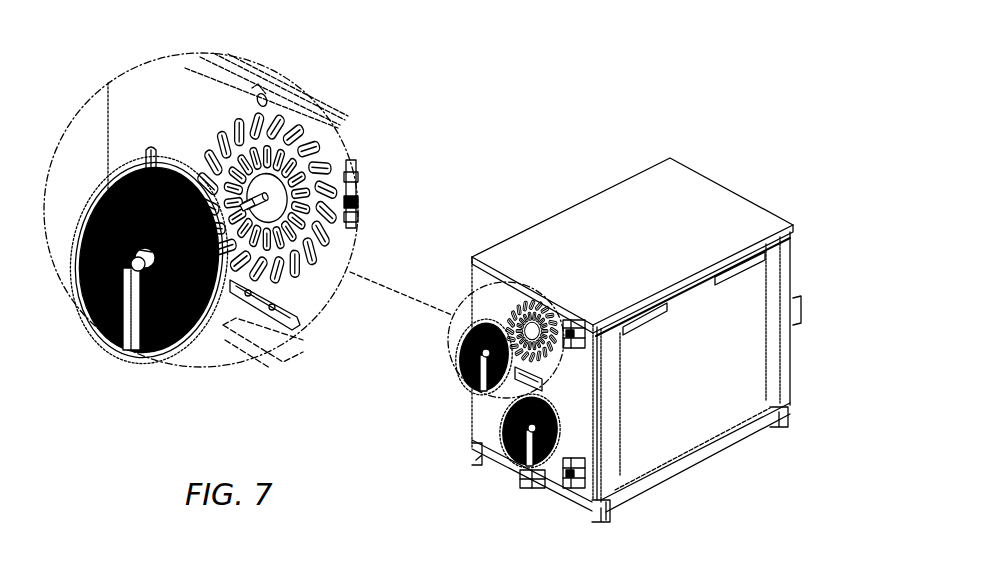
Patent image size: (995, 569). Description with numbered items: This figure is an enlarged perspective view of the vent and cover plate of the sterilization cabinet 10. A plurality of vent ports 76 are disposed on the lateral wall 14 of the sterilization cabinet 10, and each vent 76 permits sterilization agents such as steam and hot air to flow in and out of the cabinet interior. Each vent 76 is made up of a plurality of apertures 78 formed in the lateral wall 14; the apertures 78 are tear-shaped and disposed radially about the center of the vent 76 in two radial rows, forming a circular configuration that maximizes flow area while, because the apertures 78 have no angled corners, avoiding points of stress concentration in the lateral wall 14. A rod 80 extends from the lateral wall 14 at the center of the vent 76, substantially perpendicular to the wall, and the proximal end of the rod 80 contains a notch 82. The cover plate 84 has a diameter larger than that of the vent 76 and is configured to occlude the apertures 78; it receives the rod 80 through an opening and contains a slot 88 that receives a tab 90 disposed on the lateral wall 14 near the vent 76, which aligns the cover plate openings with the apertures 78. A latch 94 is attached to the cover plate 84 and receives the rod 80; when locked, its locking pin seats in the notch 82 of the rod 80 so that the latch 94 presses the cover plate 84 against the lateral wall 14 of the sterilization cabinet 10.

The sterilization cabinet 10 is at (603, 137).
The lateral wall 14 is at (108, 118).
The vent port 76 is at (288, 152).
The aperture 78 is at (310, 157).
The rod 80 is at (261, 196).
The notch 82 is at (257, 199).
The cover plate 84 is at (102, 305).
The slot 88 is at (154, 147).
The tab 90 is at (266, 99).
The latch 94 is at (131, 256).